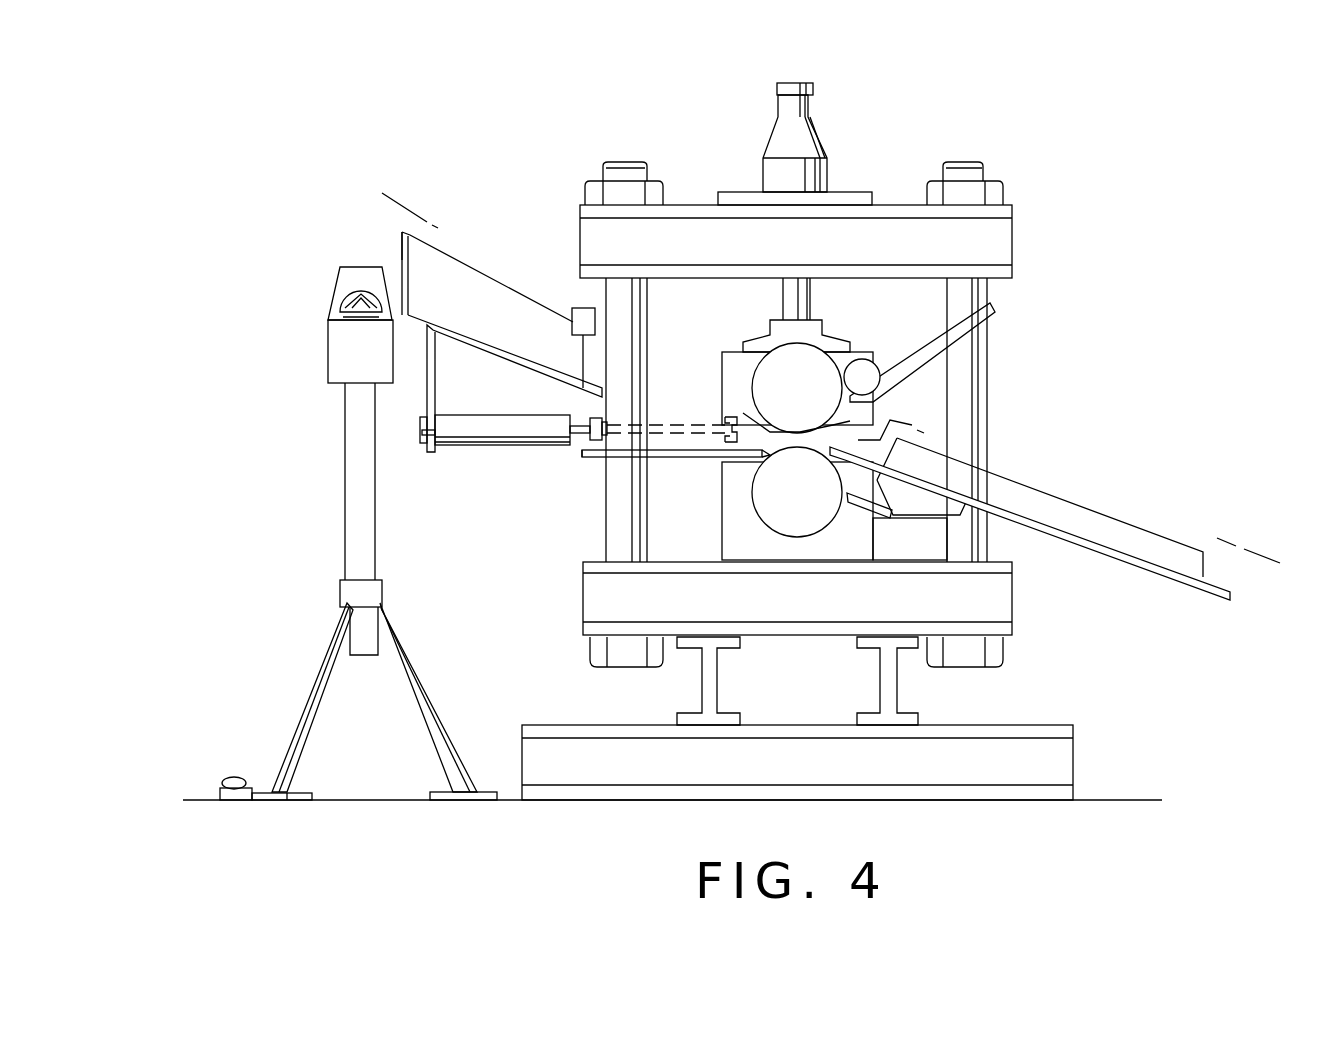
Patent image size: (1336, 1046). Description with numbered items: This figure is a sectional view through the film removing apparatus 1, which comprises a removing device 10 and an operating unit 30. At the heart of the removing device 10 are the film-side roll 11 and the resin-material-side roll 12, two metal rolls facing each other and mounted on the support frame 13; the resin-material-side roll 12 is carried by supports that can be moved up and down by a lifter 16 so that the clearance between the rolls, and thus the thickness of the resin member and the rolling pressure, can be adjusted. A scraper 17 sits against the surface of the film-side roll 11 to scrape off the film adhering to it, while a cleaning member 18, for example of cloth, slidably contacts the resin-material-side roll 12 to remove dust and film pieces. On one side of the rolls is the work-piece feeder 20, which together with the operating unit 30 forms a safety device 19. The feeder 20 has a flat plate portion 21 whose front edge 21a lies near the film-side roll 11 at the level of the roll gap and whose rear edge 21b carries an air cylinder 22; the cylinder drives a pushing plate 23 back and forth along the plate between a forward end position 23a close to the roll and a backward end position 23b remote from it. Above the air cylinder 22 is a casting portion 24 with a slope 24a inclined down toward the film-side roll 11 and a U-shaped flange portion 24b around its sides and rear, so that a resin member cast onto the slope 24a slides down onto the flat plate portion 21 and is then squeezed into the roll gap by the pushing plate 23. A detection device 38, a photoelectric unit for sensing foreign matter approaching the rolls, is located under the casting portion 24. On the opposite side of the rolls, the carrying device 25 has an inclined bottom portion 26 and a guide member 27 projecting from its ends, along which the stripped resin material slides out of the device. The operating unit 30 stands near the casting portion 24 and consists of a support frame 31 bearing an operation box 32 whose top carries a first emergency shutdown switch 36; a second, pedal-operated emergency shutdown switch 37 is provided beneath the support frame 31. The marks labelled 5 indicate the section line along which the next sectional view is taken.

The film removing apparatus 1 is at (655, 148).
The removing device 10 is at (926, 140).
The film-side roll 11 is at (790, 522).
The resin-material-side roll 12 is at (820, 366).
The support frame 13 is at (1003, 605).
The lifter 16 is at (777, 140).
The scraper 17 is at (862, 512).
The cleaning member 18 is at (878, 378).
The safety device 19 is at (308, 216).
The work-piece feeder 20 is at (512, 266).
The flat plate portion 21 is at (658, 460).
The front edge 21a is at (763, 460).
The rear edge 21b is at (582, 455).
The air cylinder 22 is at (488, 448).
The pushing plate 23 is at (600, 412).
The forward end position 23a is at (592, 412).
The backward end position 23b is at (608, 420).
The casting portion 24 is at (457, 275).
The slope 24a is at (470, 347).
The flange portion 24b is at (402, 243).
The carrying device 25 is at (1045, 466).
The bottom portion 26 is at (1128, 572).
The guide member 27 is at (1128, 530).
The operating unit 30 is at (315, 392).
The support frame 31 is at (350, 505).
The operation box 32 is at (337, 357).
The first emergency shutdown switch 36 is at (343, 300).
The second emergency shutdown switch 37 is at (233, 776).
The detection device 38 is at (580, 310).
The section line 5 is at (392, 198).